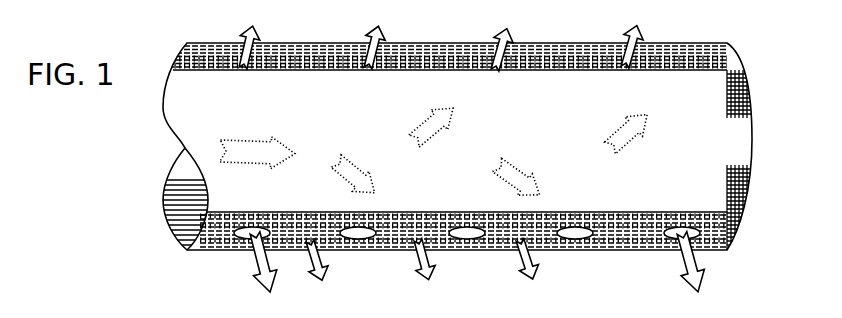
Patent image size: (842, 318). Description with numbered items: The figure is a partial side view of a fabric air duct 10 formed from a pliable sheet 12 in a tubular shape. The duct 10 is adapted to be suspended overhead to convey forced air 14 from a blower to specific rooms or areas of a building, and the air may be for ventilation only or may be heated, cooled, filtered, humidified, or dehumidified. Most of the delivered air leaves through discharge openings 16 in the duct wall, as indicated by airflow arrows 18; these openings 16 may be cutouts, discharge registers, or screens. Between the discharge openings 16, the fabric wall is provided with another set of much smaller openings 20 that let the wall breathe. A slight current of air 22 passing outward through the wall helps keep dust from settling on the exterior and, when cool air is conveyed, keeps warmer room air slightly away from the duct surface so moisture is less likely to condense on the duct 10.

The air duct 10 is at (778, 37).
The pliable sheet 12 is at (410, 42).
The forced air 14 is at (245, 137).
The discharge openings 16 is at (466, 241).
The airflow arrows 18 is at (252, 263).
The smaller openings 20 is at (305, 72).
The current of air 22 is at (256, 30).